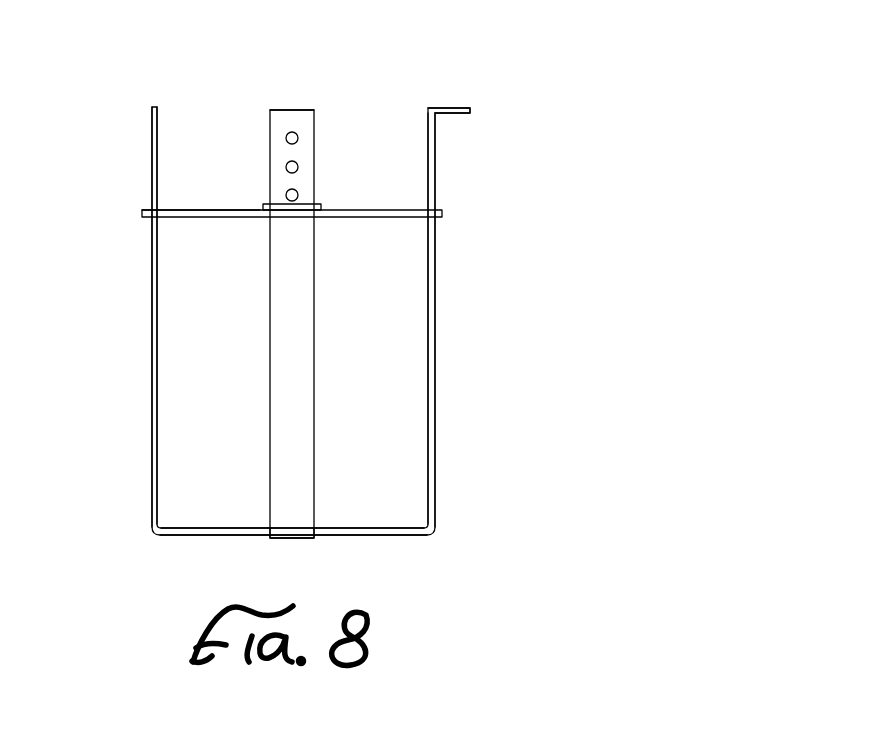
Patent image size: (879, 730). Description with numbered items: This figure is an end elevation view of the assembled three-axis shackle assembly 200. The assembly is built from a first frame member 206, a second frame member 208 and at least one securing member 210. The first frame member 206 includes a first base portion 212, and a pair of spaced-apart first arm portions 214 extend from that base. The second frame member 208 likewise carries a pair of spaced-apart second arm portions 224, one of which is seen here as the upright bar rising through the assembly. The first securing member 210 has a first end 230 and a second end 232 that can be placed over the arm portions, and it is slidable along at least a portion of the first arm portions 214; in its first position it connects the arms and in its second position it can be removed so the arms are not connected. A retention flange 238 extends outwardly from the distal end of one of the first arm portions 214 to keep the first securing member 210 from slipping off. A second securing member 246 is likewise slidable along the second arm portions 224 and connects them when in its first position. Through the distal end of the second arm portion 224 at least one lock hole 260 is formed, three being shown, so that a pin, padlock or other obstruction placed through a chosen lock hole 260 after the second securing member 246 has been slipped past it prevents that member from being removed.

The three-axis shackle assembly 200 is at (537, 94).
The first frame member 206 is at (437, 455).
The second frame member 208 is at (291, 539).
The first securing member 210 is at (226, 208).
The first base portion 212 is at (390, 536).
The first arm portions 214 is at (152, 338).
The second arm portions 224 is at (288, 383).
The first end 230 is at (173, 208).
The second end 232 is at (397, 218).
The retention flange 238 is at (450, 107).
The second securing member 246 is at (293, 218).
The lock hole 260 is at (299, 194).